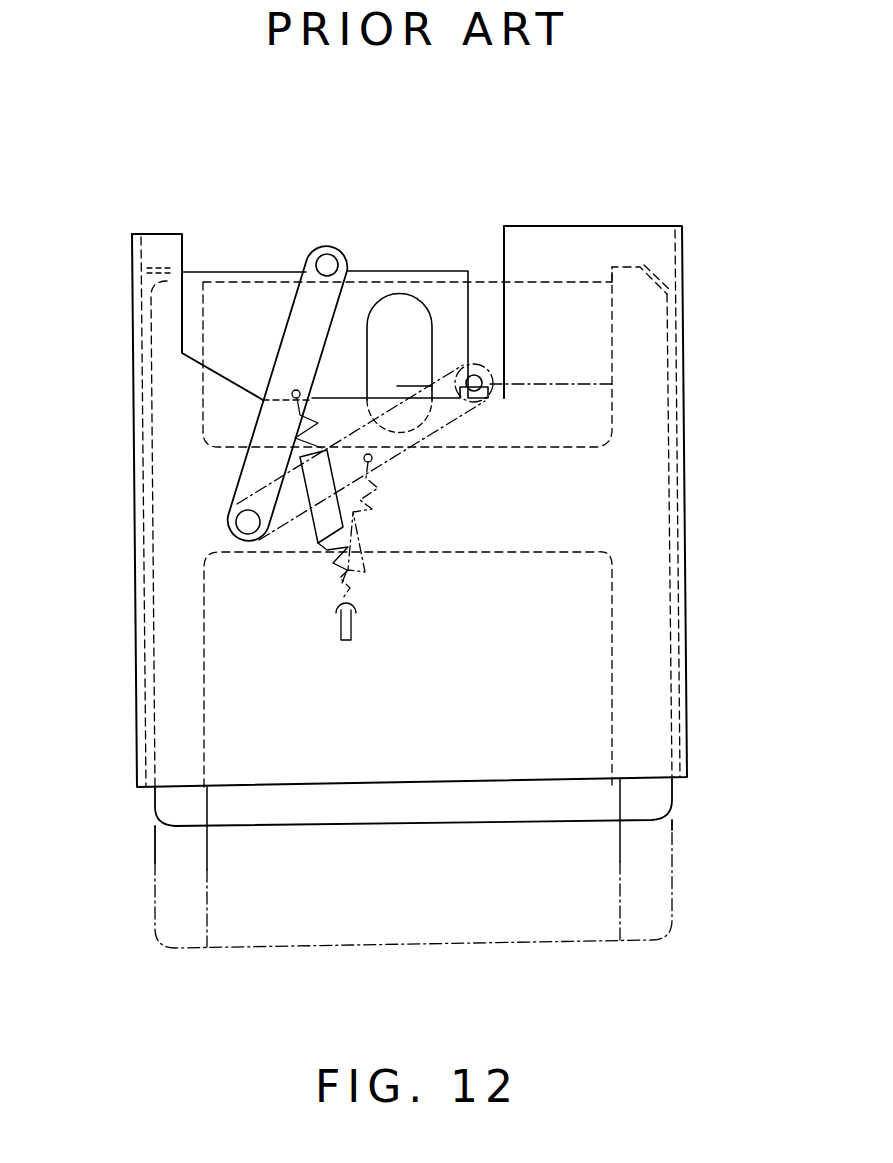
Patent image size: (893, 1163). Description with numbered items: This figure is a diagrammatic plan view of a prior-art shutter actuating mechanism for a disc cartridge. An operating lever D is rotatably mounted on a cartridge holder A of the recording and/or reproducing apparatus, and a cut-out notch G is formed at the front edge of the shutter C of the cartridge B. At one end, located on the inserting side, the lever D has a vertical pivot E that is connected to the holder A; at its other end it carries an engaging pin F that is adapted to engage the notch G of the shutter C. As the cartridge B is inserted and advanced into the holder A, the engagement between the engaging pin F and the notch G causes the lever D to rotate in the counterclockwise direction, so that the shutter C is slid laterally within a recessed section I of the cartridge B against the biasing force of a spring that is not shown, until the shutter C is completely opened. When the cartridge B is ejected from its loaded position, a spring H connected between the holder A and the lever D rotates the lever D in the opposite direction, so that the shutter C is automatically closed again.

The cartridge holder A is at (695, 249).
The cartridge B is at (684, 796).
The shutter C is at (420, 268).
The operating lever D is at (300, 330).
The vertical pivot E is at (245, 523).
The engaging pin F is at (328, 257).
The cut-out notch G is at (345, 262).
The spring H is at (317, 510).
The recessed section I is at (555, 327).